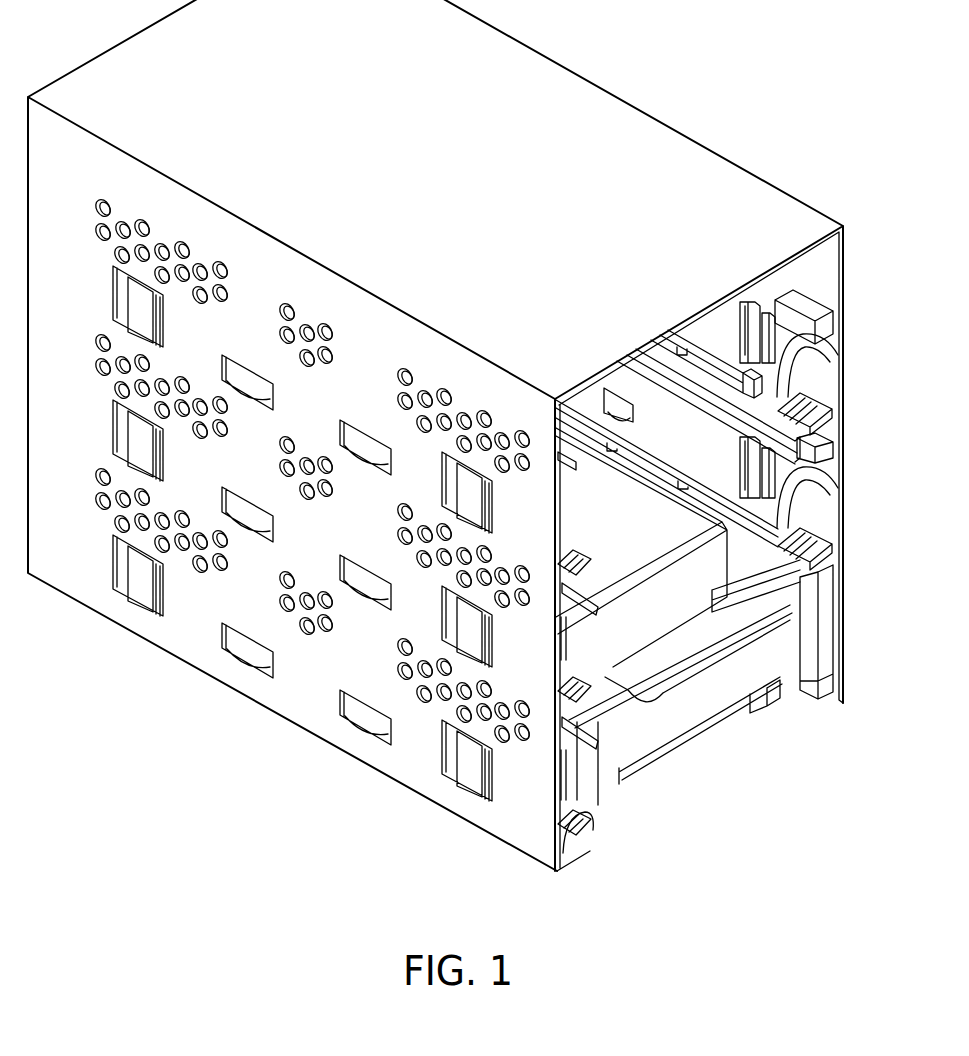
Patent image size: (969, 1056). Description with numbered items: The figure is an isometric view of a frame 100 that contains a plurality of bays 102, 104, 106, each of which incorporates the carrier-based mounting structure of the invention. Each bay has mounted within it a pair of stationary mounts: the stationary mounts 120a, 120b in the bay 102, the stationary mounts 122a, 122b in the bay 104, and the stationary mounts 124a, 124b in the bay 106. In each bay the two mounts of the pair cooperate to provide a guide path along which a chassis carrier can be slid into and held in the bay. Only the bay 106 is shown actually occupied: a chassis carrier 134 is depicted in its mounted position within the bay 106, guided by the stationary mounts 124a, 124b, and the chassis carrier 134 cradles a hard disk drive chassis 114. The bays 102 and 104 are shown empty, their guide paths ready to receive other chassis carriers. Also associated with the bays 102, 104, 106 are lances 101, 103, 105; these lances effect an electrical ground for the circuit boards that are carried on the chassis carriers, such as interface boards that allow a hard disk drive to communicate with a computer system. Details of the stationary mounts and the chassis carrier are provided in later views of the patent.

The frame 100 is at (435, 184).
The lance 101 is at (368, 442).
The bay 102 is at (828, 279).
The lance 103 is at (368, 577).
The bay 104 is at (811, 515).
The lance 105 is at (368, 712).
The bay 106 is at (811, 636).
The hard disk drive chassis 114 is at (652, 546).
The stationary mount 120a is at (555, 580).
The stationary mount 120b is at (827, 387).
The stationary mount 122a is at (557, 715).
The stationary mount 122b is at (829, 558).
The stationary mount 124a is at (555, 852).
The stationary mount 124b is at (829, 691).
The chassis carrier 134 is at (652, 735).